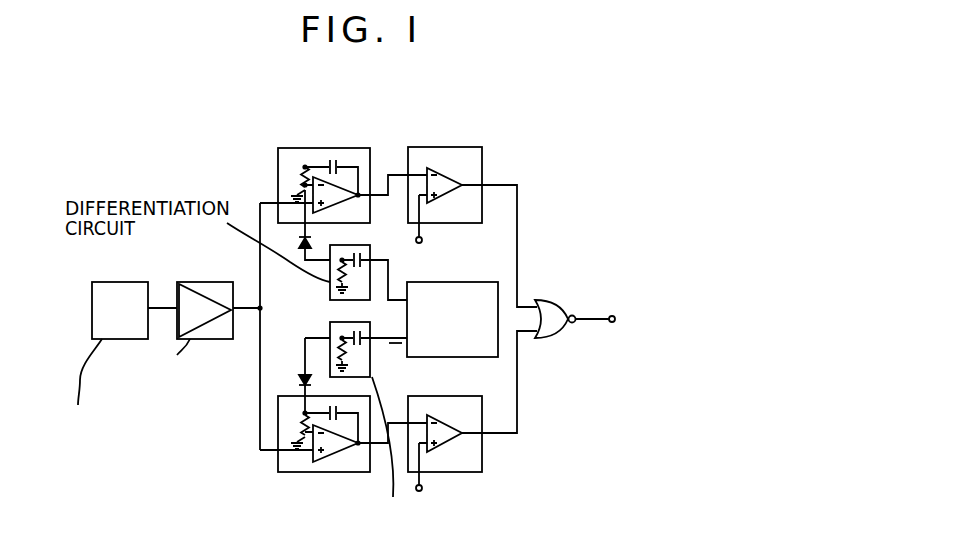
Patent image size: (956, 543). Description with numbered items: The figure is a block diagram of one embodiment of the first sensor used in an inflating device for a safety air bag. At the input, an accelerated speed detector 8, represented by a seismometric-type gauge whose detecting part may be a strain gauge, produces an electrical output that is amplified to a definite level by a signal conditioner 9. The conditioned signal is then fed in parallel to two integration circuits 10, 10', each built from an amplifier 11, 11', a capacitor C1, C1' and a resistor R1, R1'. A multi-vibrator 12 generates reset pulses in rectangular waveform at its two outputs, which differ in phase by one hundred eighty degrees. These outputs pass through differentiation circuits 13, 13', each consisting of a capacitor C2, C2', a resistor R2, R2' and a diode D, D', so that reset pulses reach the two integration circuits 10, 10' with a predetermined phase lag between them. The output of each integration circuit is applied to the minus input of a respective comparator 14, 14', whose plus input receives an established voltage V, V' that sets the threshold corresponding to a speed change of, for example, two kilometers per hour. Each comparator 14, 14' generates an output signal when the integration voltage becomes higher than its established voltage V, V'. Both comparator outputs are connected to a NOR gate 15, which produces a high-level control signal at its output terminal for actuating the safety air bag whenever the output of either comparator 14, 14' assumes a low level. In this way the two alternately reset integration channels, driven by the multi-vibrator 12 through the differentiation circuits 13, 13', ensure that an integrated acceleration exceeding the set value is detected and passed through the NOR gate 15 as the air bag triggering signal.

The accelerated speed detector 8 is at (118, 282).
The signal conditioner 9 is at (199, 282).
The integration circuit 10 is at (328, 152).
The amplifier 11 is at (370, 201).
The resistor R1 is at (271, 176).
The capacitor C1 is at (338, 157).
The diode D is at (299, 245).
The differentiation circuit 13 is at (347, 287).
The resistor R2 is at (316, 288).
The capacitor C2 is at (373, 252).
The differentiation circuit 13' is at (411, 426).
The resistor R2' is at (307, 348).
The capacitor C2' is at (373, 327).
The diode D' is at (289, 390).
The integration circuit 10' is at (322, 469).
The amplifier 11' is at (370, 459).
The resistor R1' is at (263, 434).
The capacitor C1' is at (290, 424).
The multi-vibrator 12 is at (447, 282).
The comparator 14 is at (504, 207).
The established voltage V is at (428, 244).
The comparator 14' is at (543, 414).
The established voltage V' is at (432, 486).
The NOR gate 15 is at (553, 300).